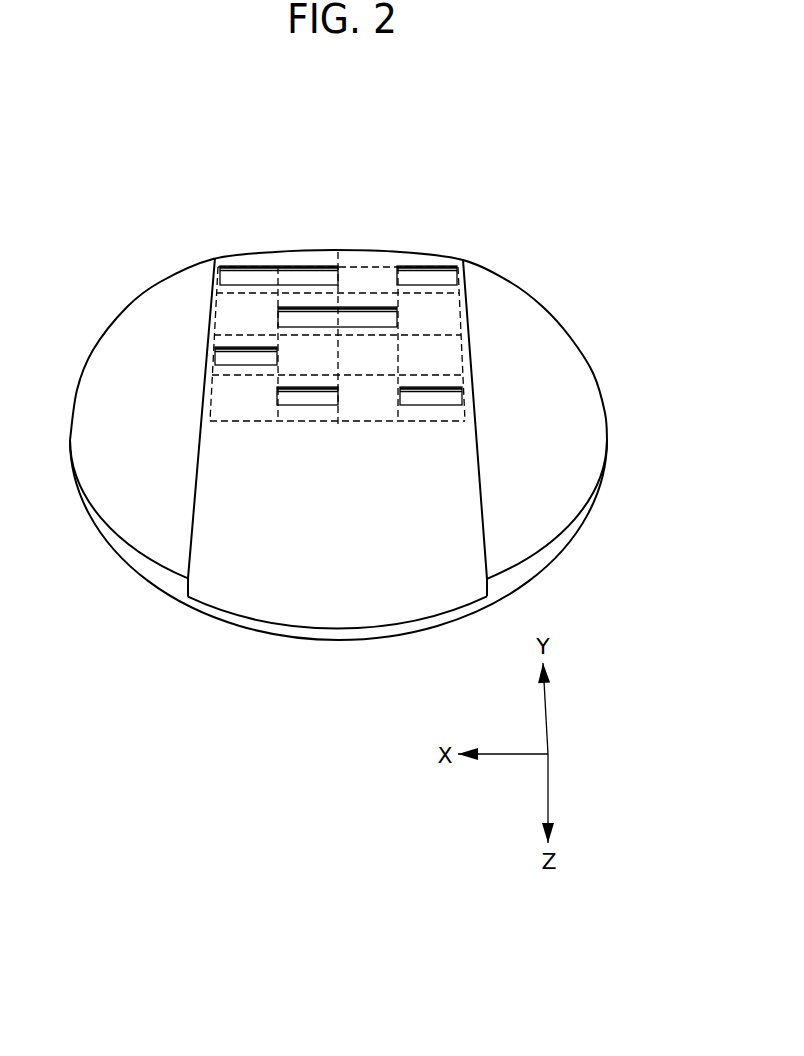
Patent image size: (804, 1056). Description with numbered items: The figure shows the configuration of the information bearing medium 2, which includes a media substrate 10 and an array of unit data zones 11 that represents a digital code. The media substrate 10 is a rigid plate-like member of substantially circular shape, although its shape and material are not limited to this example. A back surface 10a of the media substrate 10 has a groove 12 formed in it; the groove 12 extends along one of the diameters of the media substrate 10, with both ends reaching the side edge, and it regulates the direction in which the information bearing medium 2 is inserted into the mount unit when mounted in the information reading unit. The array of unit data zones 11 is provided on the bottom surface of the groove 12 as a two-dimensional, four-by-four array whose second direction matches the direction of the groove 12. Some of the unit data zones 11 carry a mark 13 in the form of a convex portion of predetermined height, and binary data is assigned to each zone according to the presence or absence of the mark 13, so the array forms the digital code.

The information bearing medium 2 is at (133, 290).
The media substrate 10 is at (545, 552).
The back surface 10a is at (550, 360).
The unit data zones 11 is at (467, 347).
The groove 12 is at (283, 593).
The mark 13 is at (367, 313).